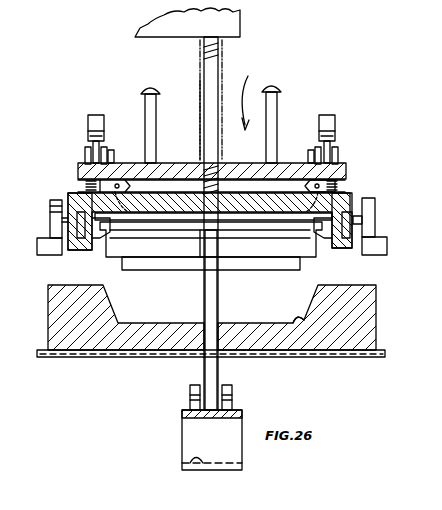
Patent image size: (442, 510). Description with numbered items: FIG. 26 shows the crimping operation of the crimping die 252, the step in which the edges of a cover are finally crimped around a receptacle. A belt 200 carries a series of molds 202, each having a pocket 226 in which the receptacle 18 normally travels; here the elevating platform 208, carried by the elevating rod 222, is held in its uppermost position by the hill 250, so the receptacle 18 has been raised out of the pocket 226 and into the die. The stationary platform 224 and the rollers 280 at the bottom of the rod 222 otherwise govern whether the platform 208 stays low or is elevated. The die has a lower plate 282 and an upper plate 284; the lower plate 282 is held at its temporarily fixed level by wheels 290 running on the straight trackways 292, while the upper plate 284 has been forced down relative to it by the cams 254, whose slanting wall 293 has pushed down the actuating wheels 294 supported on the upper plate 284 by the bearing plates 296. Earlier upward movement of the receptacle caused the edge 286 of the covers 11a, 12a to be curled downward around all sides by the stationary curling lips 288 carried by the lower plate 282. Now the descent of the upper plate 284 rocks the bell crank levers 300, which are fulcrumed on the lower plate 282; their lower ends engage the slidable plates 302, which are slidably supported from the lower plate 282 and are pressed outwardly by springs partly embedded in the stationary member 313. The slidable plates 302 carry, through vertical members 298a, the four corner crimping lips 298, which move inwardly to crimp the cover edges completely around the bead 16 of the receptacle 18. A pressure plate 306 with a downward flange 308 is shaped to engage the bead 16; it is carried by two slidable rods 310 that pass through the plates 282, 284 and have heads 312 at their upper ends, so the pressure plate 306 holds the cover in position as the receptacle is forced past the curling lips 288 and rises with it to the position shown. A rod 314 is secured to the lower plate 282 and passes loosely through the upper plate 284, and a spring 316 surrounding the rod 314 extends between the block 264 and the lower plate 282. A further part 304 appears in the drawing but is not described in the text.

The block 264 is at (240, 22).
The rod 314 is at (203, 115).
The spring 316 is at (200, 143).
The elevating rod 222 is at (205, 363).
The slidable rod 310 is at (157, 102).
The head 312 is at (152, 82).
The die 252 is at (258, 96).
The cam 254 is at (96, 115).
The slanting wall 293 is at (90, 130).
The actuating wheel 294 is at (93, 146).
The bracket 304 is at (85, 158).
The bearing plate 296 is at (112, 150).
The upper plate 284 is at (337, 182).
The bell crank lever 300 is at (212, 163).
The slidable plate 302 is at (150, 186).
The pressure plate 306 is at (200, 212).
The edge 286 is at (68, 205).
The lower plate 282 is at (352, 205).
The stationary curling lip 288 is at (92, 240).
The corner crimping lip 298 is at (100, 245).
The downward flange 308 is at (304, 220).
The receptacle 18 is at (182, 257).
The cover 11a is at (170, 230).
The cover 12a is at (210, 241).
The stationary member 313 is at (250, 222).
The elevating platform 208 is at (262, 270).
The wheel 290 is at (56, 200).
The vertical member 298a is at (52, 200).
The track 292 is at (37, 245).
The bead 16 is at (362, 222).
The mold 202 is at (348, 350).
The pocket 226 is at (302, 350).
The belt 200 is at (122, 357).
The roller 280 is at (232, 393).
The hill 250 is at (242, 410).
The stationary platform 224 is at (190, 463).